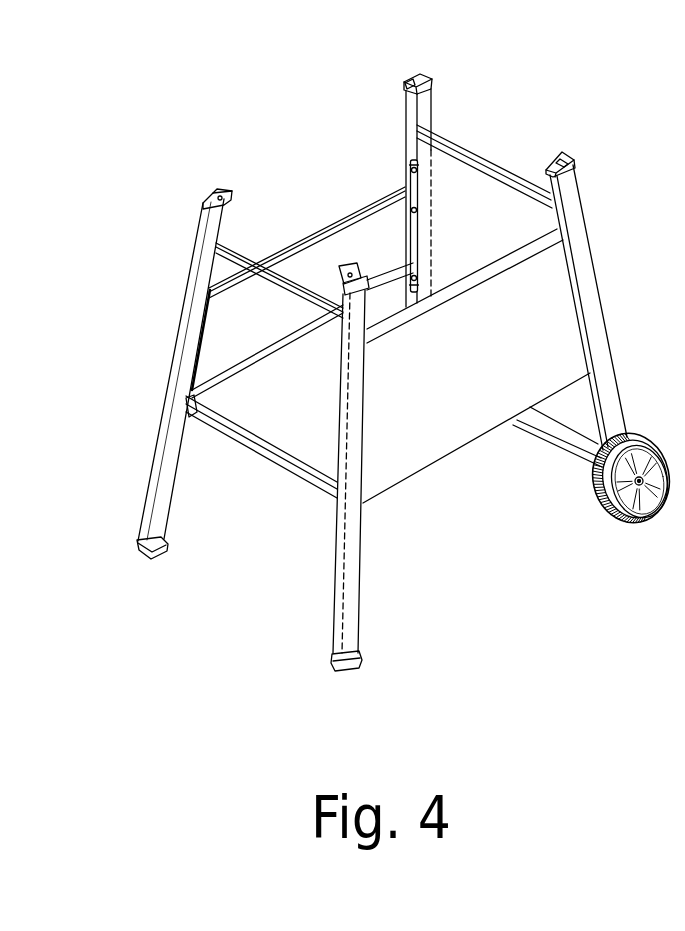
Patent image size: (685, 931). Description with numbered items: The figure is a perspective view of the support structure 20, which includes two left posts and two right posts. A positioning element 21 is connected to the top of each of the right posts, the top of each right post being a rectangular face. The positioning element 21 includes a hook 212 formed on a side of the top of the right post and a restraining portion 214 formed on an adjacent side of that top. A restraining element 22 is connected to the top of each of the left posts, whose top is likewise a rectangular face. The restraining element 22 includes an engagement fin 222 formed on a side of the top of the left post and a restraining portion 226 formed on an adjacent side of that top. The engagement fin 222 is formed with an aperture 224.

The support structure 20 is at (320, 137).
The positioning element 21 is at (571, 163).
The restraining element 22 is at (208, 197).
The hook 212 is at (405, 80).
The restraining portion 214 is at (433, 80).
The engagement fin 222 is at (232, 200).
The aperture 224 is at (351, 267).
The restraining portion 226 is at (416, 262).